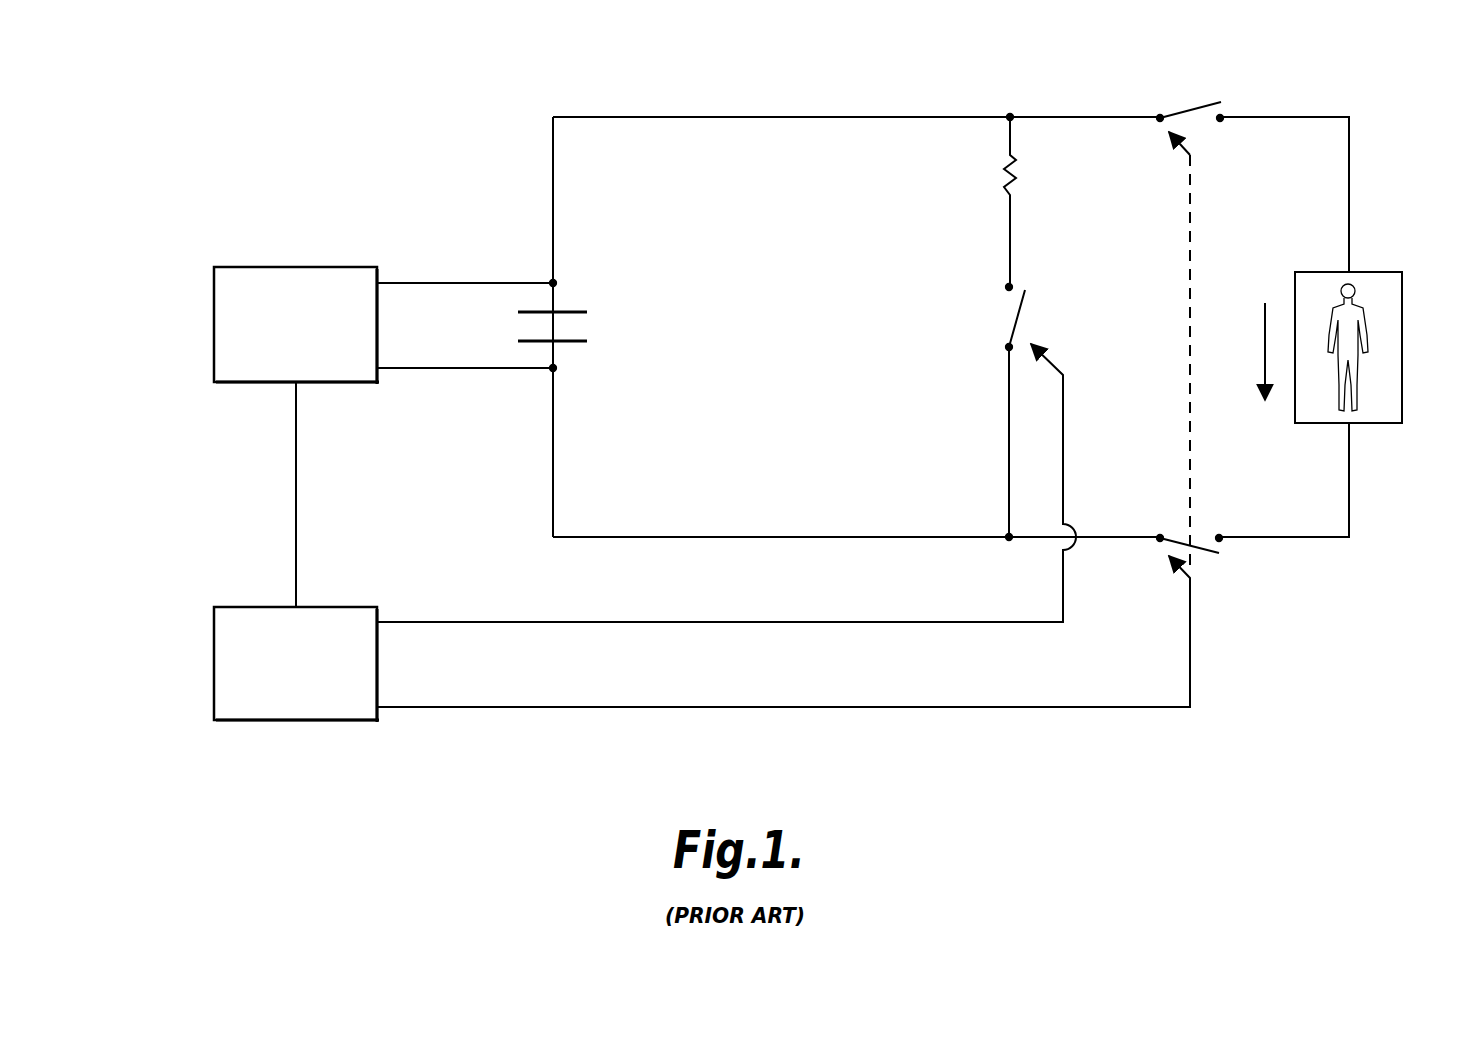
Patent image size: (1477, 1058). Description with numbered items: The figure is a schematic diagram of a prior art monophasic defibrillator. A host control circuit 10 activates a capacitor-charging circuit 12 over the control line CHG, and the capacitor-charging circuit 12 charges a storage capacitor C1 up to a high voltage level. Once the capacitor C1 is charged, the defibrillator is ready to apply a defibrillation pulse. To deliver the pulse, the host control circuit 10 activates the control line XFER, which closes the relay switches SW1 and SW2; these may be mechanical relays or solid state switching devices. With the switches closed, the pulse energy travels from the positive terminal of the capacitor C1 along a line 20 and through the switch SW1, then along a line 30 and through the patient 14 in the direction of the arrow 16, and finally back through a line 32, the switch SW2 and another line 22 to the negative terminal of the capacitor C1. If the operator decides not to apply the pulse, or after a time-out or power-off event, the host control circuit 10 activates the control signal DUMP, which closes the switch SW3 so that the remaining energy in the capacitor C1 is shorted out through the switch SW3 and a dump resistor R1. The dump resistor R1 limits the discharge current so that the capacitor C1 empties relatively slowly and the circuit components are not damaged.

The host control circuit 10 is at (214, 662).
The capacitor-charging circuit 12 is at (214, 340).
The patient 14 is at (1403, 334).
The arrow 16 is at (1263, 340).
The line 20 is at (817, 117).
The line 22 is at (807, 540).
The line 30 is at (1295, 117).
The line 32 is at (1295, 542).
The storage capacitor C1 is at (500, 326).
The dump resistor R1 is at (1028, 201).
The relay switch SW1 is at (1188, 101).
The relay switch SW2 is at (1205, 558).
The switch SW3 is at (1018, 320).
The charge control line CHG is at (296, 493).
The control signal DUMP is at (626, 623).
The control line XFER is at (632, 706).